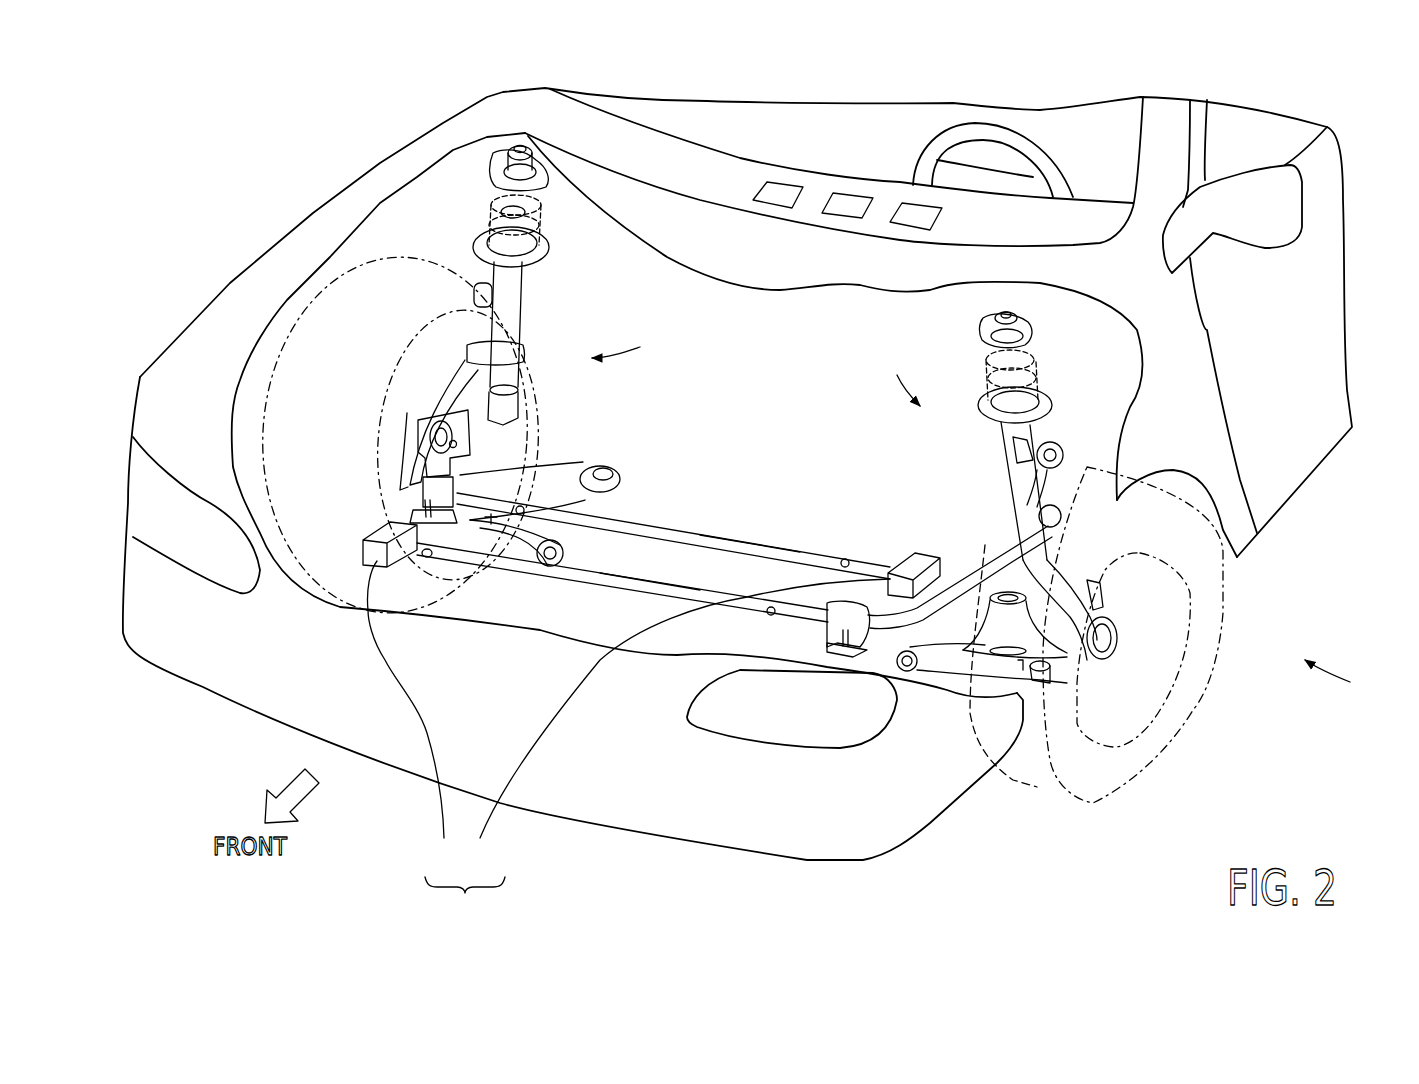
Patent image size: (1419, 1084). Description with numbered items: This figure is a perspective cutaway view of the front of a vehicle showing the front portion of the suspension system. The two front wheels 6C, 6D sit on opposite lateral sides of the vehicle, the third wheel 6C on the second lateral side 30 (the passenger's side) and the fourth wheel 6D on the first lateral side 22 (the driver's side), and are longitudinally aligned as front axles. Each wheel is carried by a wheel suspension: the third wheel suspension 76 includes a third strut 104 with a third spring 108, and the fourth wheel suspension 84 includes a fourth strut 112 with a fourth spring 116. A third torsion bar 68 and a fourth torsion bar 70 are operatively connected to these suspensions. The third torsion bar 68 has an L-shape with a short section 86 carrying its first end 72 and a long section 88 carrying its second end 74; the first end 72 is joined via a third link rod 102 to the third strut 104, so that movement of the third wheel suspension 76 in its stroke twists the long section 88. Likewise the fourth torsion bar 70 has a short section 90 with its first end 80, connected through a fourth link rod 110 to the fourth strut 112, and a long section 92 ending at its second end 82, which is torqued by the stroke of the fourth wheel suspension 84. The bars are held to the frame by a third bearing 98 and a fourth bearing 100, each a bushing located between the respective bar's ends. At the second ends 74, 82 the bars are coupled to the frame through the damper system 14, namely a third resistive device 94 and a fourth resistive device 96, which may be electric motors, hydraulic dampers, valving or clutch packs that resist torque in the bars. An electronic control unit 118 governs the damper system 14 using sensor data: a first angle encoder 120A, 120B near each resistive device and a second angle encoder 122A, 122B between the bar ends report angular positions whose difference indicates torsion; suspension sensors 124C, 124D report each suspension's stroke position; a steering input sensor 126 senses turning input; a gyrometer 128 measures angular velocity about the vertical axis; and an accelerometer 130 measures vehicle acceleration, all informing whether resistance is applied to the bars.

The second lateral side 30 is at (253, 147).
The third wheel 6C is at (310, 330).
The fourth wheel 6D is at (1217, 620).
The first lateral side 22 is at (1345, 683).
The damper system 14 is at (465, 904).
The fourth resistive device 96 is at (411, 718).
The third resistive device 94 is at (680, 727).
The third torsion bar 68 is at (683, 531).
The long section 88 is at (743, 543).
The fourth torsion bar 70 is at (573, 583).
The long section 92 is at (652, 590).
The short section 90 is at (985, 578).
The second end 74 is at (878, 556).
The second end 82 is at (413, 565).
The first end 72 is at (458, 348).
The third wheel suspension 76 is at (630, 347).
The fourth wheel suspension 84 is at (900, 372).
The first end 80 is at (1050, 543).
The short section 86 is at (420, 387).
The third bearing 98 is at (457, 477).
The fourth bearing 100 is at (871, 655).
The third link rod 102 is at (478, 318).
The third strut 104 is at (527, 300).
The third spring 108 is at (548, 225).
The fourth link rod 110 is at (1068, 481).
The fourth strut 112 is at (1007, 473).
The fourth spring 116 is at (1037, 370).
The electronic control unit 118 is at (907, 220).
The gyrometer 128 is at (781, 205).
The accelerometer 130 is at (853, 203).
The first angle encoder 120A is at (845, 559).
The first angle encoder 120B is at (427, 558).
The second angle encoder 122A is at (522, 506).
The second angle encoder 122B is at (770, 616).
The suspension sensor 124C is at (491, 522).
The suspension sensor 124D is at (1021, 668).
The steering input sensor 126 is at (1053, 664).